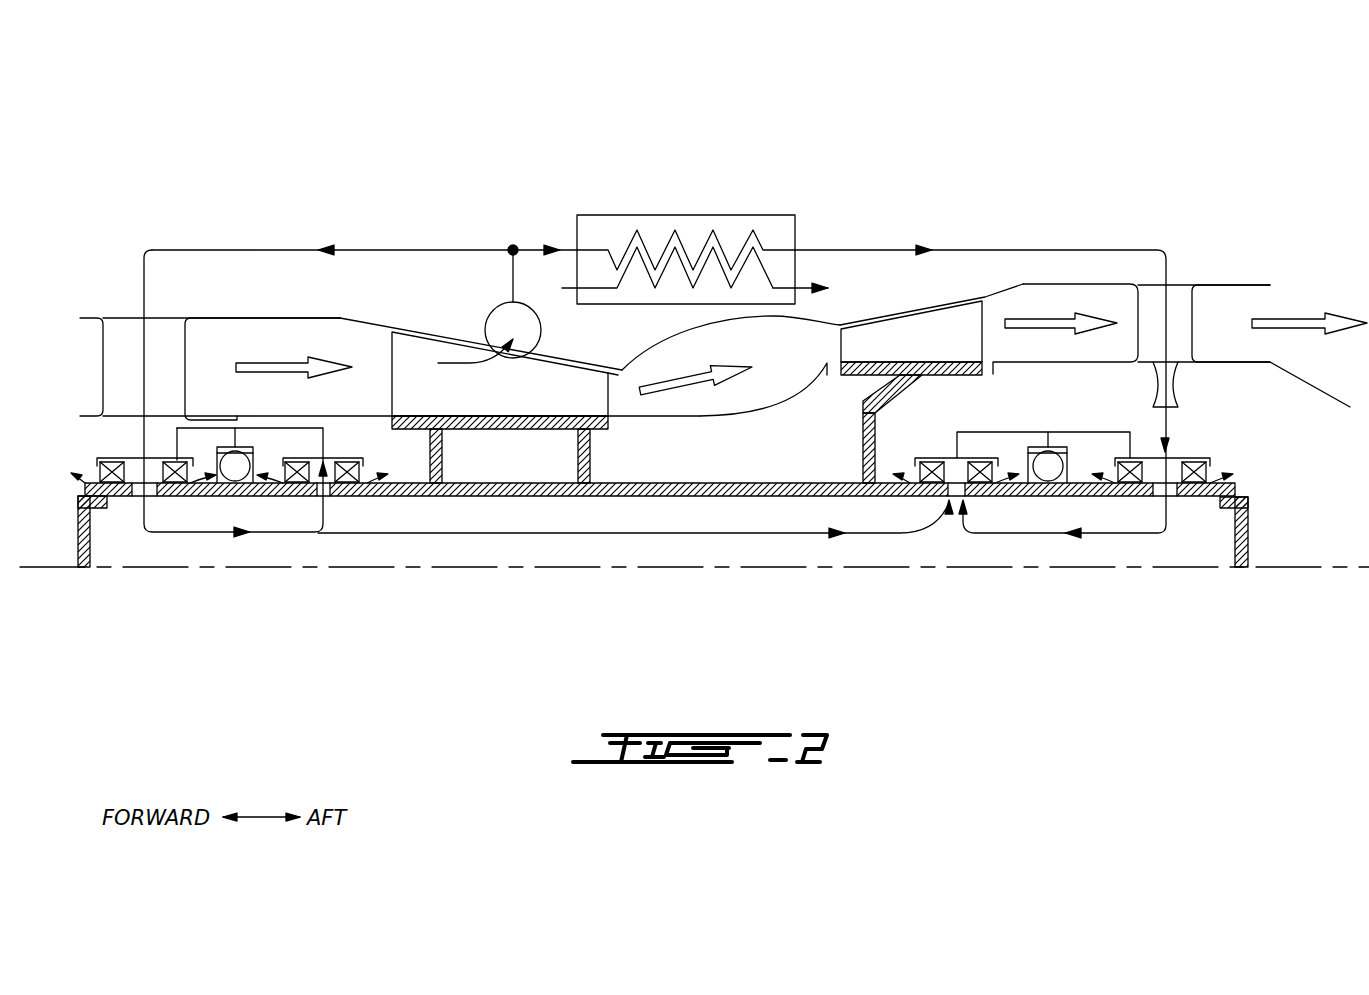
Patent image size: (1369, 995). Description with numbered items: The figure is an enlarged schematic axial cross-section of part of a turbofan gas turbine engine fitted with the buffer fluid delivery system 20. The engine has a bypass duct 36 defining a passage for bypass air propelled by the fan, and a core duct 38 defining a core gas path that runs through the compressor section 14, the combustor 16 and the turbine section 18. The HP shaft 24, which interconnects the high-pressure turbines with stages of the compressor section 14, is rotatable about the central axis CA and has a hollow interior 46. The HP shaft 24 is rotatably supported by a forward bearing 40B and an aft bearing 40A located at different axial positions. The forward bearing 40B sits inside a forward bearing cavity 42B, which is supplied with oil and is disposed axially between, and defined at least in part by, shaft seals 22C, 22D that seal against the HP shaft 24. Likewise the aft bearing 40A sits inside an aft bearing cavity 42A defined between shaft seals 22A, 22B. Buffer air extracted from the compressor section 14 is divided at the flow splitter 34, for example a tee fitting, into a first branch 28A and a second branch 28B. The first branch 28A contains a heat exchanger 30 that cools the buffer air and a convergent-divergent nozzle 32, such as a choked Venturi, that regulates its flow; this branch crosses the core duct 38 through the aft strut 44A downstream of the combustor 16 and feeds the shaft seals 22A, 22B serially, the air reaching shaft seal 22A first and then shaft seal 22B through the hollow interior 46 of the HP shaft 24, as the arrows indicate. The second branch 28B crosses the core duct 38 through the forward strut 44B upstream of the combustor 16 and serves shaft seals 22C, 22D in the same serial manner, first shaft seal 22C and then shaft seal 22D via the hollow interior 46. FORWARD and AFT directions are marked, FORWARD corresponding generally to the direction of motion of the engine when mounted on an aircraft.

The buffer fluid delivery system 20 is at (840, 218).
The compressor section 14 is at (422, 357).
The combustor 16 is at (697, 395).
The turbine section 18 is at (910, 342).
The shaft seal 22A is at (1199, 433).
The shaft seal 22B is at (953, 403).
The shaft seal 22C is at (117, 512).
The shaft seal 22D is at (352, 512).
The high-pressure shaft 24 is at (505, 497).
The first branch 28A is at (527, 250).
The second branch 28B is at (372, 250).
The heat exchanger 30 is at (690, 215).
The convergent-divergent nozzle 32 is at (1173, 367).
The flow splitter 34 is at (513, 250).
The bypass duct 36 is at (115, 262).
The core duct 38 is at (345, 343).
The aft bearing 40A is at (1045, 514).
The forward bearing 40B is at (218, 514).
The aft bearing cavity 42A is at (1012, 445).
The forward bearing cavity 42B is at (268, 447).
The aft strut 44A is at (1151, 316).
The forward strut 44B is at (162, 347).
The hollow interior 46 is at (595, 520).
The central axis CA is at (1290, 570).